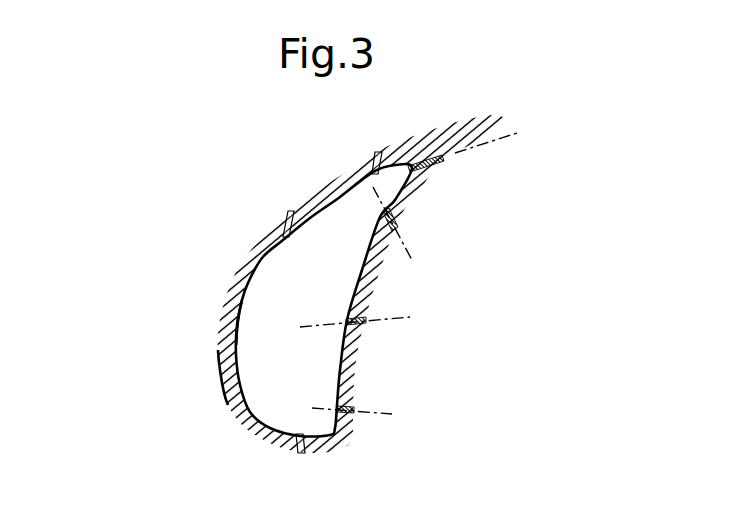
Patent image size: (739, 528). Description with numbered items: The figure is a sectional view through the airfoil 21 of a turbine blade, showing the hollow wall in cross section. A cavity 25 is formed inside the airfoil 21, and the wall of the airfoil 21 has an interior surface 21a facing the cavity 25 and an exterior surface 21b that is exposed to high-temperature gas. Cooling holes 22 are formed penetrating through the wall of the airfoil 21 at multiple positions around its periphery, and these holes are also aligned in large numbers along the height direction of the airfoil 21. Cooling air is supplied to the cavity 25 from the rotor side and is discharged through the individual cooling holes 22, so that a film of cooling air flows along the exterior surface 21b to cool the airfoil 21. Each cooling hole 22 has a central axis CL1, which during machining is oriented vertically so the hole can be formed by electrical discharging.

The airfoil 21 is at (236, 250).
The interior surface 21a is at (230, 333).
The exterior surface 21b is at (223, 378).
The cooling holes 22 is at (402, 227).
The cavity 25 is at (282, 383).
The central axis CL1 is at (435, 275).